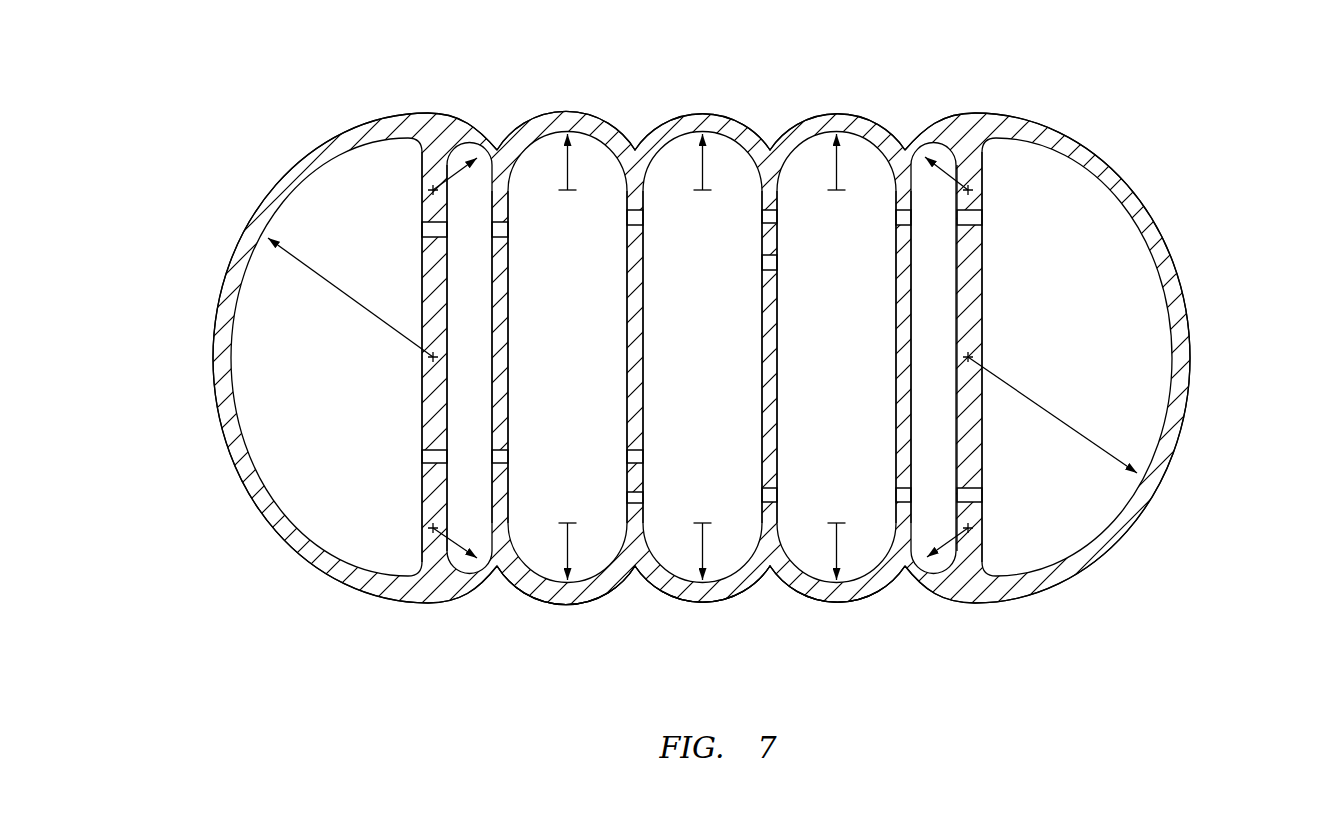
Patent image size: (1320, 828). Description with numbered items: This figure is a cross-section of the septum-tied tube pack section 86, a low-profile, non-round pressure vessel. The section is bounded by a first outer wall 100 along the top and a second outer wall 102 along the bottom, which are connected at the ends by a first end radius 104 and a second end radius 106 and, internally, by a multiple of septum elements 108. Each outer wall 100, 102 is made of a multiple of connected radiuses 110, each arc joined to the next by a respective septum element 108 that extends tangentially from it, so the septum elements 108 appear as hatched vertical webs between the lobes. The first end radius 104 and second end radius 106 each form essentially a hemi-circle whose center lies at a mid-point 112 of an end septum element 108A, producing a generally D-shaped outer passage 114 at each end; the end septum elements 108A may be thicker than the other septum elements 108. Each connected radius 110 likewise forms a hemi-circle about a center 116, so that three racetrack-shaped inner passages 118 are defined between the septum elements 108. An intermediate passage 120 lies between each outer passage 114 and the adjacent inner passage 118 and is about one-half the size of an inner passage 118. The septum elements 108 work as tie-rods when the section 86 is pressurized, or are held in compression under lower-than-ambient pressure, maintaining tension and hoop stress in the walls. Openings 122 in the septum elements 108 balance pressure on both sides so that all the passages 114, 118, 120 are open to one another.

The septum-tied tube pack section 86 is at (1178, 109).
The first outer wall 100 is at (772, 115).
The second outer wall 102 is at (812, 617).
The first end radius 104 is at (203, 352).
The second end radius 106 is at (1204, 351).
The septum element 108 is at (505, 495).
The end septum element 108A is at (430, 253).
The connected radius 110 is at (568, 113).
The mid-point 112 is at (432, 359).
The outer passage 114 is at (267, 363).
The center 116 is at (567, 196).
The inner passage 118 is at (546, 331).
The intermediate passage 120 is at (445, 301).
The opening 122 is at (432, 455).